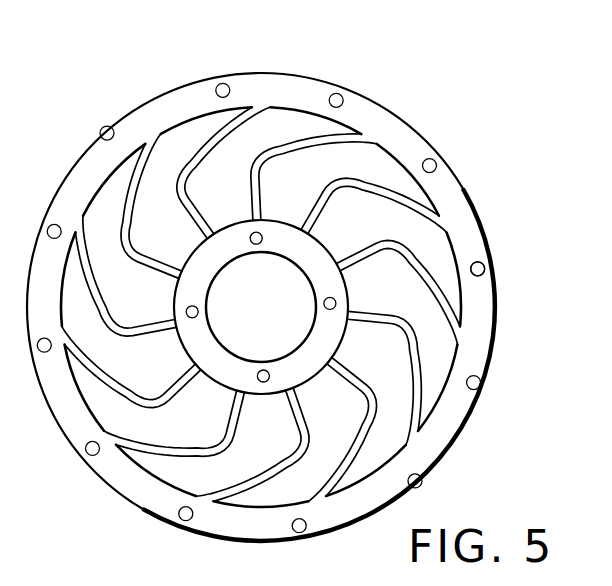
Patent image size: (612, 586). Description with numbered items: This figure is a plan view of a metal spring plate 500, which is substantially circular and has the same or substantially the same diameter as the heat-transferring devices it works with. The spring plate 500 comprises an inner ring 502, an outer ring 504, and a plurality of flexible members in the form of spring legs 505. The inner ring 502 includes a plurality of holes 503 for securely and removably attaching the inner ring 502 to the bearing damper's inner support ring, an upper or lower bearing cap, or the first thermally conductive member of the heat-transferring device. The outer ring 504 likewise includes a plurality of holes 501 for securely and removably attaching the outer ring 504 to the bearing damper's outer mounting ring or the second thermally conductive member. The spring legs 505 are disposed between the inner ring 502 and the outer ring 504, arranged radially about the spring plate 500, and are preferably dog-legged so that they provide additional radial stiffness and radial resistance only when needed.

The spring plate 500 is at (286, 295).
The holes 501 is at (484, 270).
The inner ring 502 is at (327, 244).
The holes 503 is at (261, 370).
The outer ring 504 is at (403, 141).
The spring legs 505 is at (430, 273).